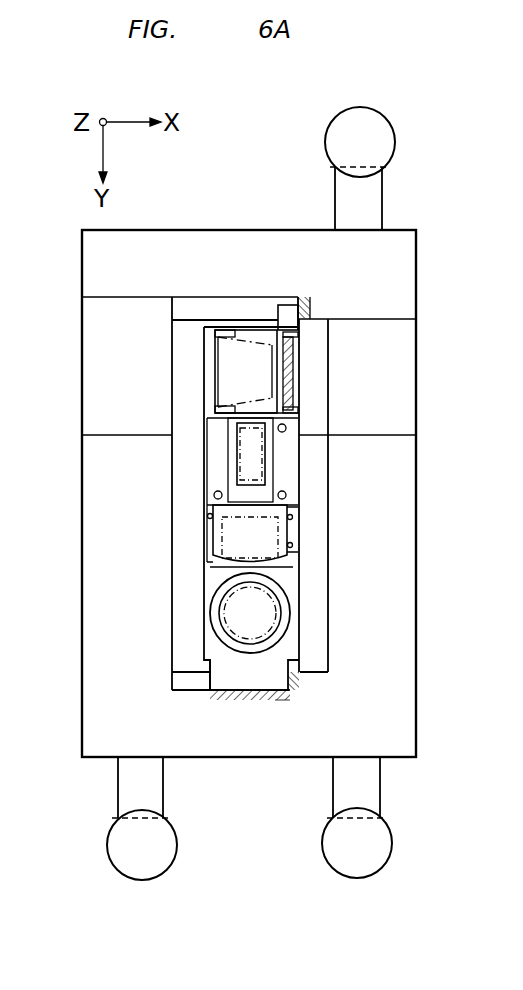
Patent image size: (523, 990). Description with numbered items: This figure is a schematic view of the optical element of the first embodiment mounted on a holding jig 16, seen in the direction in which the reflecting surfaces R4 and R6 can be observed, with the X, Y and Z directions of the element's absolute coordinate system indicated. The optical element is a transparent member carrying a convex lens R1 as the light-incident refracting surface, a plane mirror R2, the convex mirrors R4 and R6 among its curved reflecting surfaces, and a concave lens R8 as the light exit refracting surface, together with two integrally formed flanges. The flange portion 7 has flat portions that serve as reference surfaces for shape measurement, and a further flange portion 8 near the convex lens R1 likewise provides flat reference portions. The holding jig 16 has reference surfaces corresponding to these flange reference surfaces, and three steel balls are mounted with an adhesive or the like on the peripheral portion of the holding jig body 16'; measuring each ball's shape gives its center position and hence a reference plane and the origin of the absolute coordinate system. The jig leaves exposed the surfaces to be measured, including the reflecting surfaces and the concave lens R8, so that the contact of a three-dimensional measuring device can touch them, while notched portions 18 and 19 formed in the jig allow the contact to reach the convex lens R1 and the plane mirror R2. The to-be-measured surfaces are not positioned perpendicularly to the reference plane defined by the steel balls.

The holding jig 16 is at (217, 500).
The holding jig body 16' is at (330, 493).
The notched portion 18 is at (407, 394).
The notched portion 19 is at (100, 393).
The flange portion 7 is at (232, 678).
The flange portion 8 is at (296, 300).
The convex lens R1 is at (298, 353).
The plane mirror R2 is at (232, 363).
The convex mirror R4 is at (245, 462).
The convex mirror R6 is at (228, 545).
The concave lens R8 is at (232, 622).